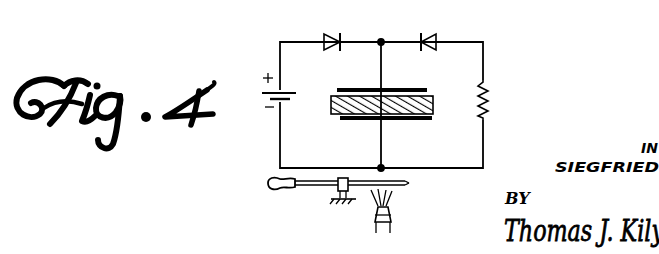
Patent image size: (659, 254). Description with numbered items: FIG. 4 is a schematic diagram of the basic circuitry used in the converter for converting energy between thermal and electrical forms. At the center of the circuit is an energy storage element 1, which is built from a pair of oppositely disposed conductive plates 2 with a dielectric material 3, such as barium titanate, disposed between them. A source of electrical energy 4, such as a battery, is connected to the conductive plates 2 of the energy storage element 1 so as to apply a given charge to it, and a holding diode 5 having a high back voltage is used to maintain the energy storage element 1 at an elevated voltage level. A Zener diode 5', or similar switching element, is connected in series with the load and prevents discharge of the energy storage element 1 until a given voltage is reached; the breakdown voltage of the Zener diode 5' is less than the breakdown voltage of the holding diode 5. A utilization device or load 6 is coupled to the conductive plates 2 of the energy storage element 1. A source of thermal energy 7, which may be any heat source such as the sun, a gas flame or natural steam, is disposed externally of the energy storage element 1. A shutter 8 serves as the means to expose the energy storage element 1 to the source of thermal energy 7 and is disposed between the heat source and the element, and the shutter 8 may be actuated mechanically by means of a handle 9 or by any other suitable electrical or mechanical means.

The energy storage element 1 is at (418, 126).
The conductive plates 2 is at (338, 119).
The dielectric material 3 is at (432, 119).
The source of electrical energy 4 is at (262, 100).
The holding diode 5 is at (285, 37).
The Zener diode 5' is at (424, 29).
The load 6 is at (486, 118).
The source of thermal energy 7 is at (390, 226).
The shutter 8 is at (409, 183).
The handle 9 is at (276, 189).